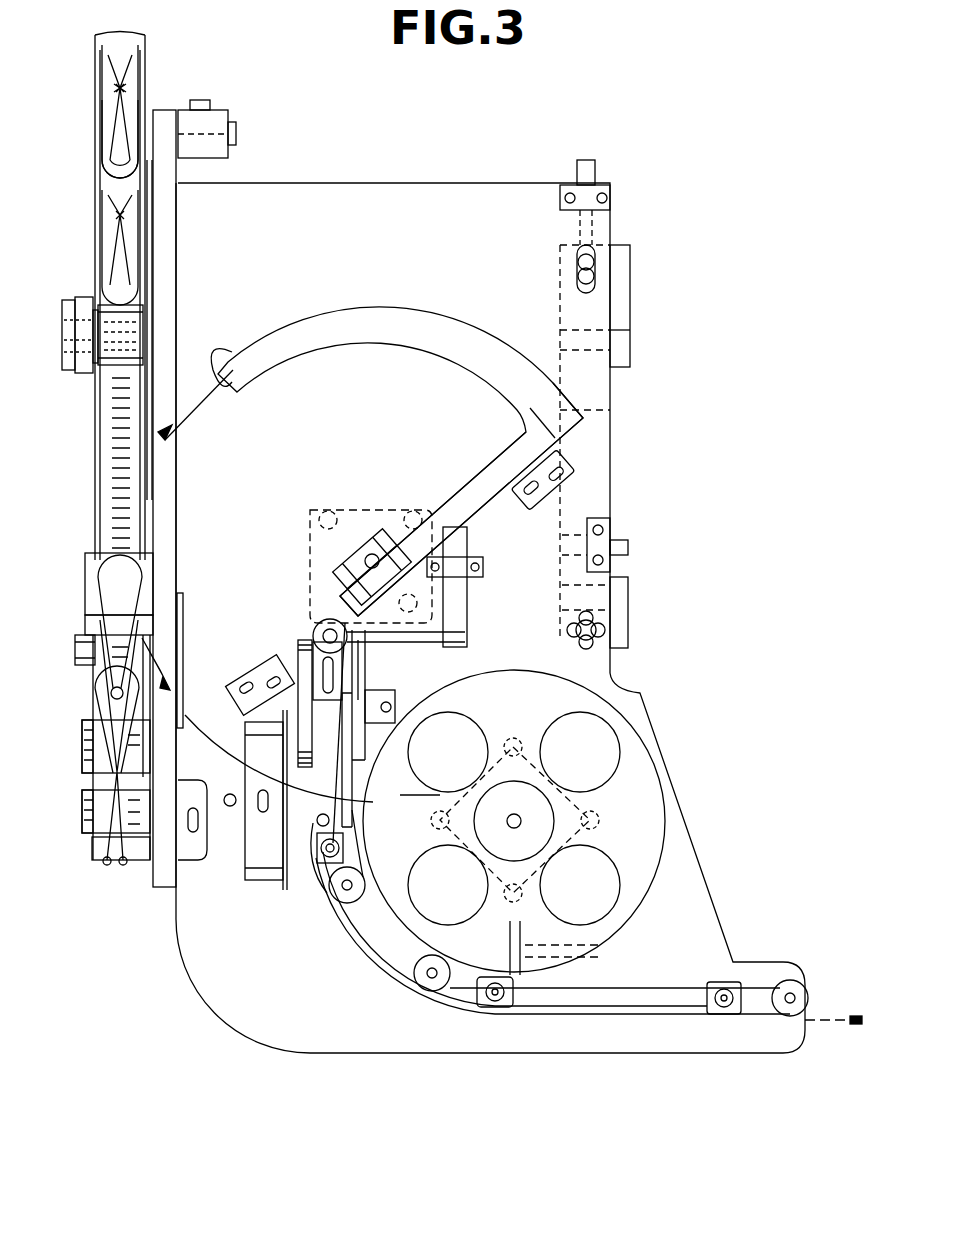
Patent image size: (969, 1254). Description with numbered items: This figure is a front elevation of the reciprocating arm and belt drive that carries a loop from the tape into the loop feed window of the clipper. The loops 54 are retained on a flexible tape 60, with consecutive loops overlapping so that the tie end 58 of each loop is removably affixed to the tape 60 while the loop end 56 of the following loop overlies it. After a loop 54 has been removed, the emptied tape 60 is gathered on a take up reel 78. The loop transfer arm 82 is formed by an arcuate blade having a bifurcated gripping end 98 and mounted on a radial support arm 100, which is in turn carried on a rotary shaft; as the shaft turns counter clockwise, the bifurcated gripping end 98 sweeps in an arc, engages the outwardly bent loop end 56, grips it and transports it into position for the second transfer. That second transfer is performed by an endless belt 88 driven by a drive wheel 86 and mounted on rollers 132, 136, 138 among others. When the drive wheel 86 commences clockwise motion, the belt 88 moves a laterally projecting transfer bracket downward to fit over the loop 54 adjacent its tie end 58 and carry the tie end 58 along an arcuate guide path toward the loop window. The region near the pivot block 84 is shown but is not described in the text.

The loop 54 is at (96, 165).
The loop end 56 is at (106, 186).
The tie end 58 is at (118, 94).
The tape 60 is at (145, 82).
The take up reel 78 is at (72, 372).
The loop transfer arm 82 is at (302, 335).
The pivot block 84 is at (372, 553).
The drive wheel 86 is at (652, 802).
The endless belt 88 is at (372, 966).
The bifurcated gripping end 98 is at (195, 375).
The radial support arm 100 is at (488, 473).
The roller 132 is at (338, 893).
The roller 136 is at (432, 990).
The roller 138 is at (792, 982).